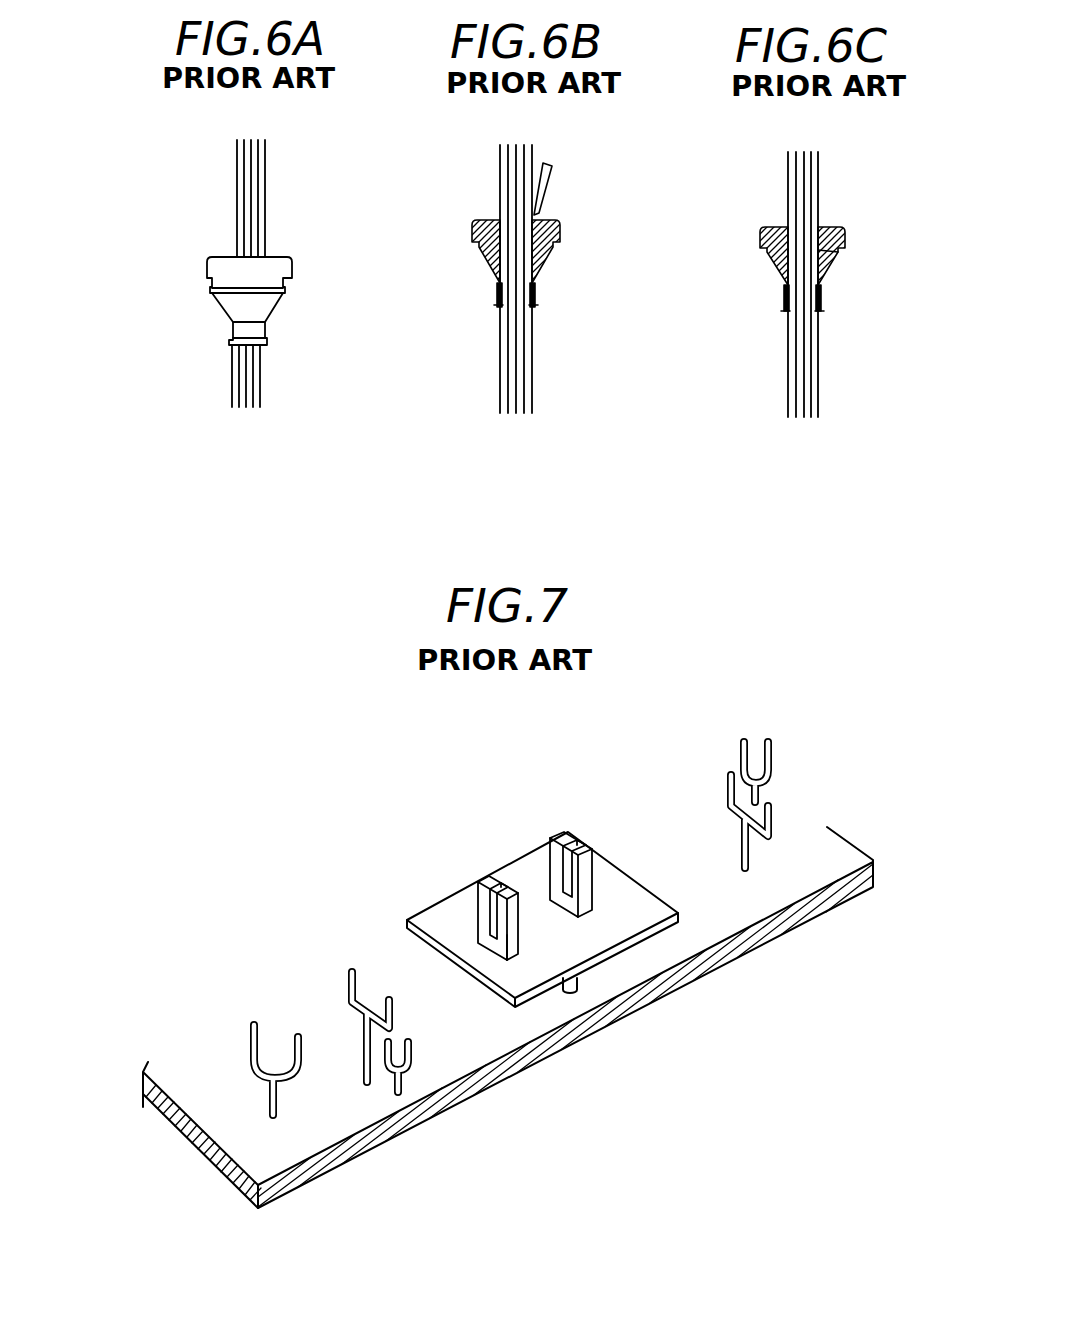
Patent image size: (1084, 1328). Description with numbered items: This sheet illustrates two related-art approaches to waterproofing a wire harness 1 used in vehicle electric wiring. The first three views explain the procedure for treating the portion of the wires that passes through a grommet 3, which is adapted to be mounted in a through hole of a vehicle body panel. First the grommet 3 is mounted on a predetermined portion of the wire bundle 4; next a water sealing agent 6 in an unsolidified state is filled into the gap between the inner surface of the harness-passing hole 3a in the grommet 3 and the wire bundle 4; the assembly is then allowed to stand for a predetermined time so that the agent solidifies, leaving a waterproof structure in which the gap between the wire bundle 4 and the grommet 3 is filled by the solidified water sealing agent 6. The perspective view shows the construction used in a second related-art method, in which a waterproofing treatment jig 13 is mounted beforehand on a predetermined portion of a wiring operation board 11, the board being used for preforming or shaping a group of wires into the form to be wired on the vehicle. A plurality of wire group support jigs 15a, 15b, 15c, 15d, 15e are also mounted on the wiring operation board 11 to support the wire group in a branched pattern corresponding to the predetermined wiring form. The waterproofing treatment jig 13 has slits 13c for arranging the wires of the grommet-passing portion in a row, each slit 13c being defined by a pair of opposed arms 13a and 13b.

In FIG. 6A, the wire harness 1 is at (223, 273).
In FIG. 6A, the grommet 3 is at (207, 278).
In FIG. 6B, the grommet 3 is at (480, 258).
In FIG. 6C, the grommet 3 is at (845, 237).
In FIG. 6B, the harness-passing hole 3a is at (498, 222).
In FIG. 6A, the wire bundle 4 is at (240, 208).
In FIG. 6B, the wire bundle 4 is at (500, 168).
In FIG. 6C, the wire bundle 4 is at (815, 335).
In FIG. 6B, the water sealing agent 6 is at (552, 170).
In FIG. 6C, the water sealing agent 6 is at (832, 270).
In FIG. 7, the wiring operation board 11 is at (528, 1068).
In FIG. 7, the waterproofing treatment jig 13 is at (535, 870).
In FIG. 7, the arm 13a is at (470, 897).
In FIG. 7, the arm 13b is at (518, 935).
In FIG. 7, the slit 13c is at (470, 898).
In FIG. 7, the wire group support jig 15a is at (250, 1036).
In FIG. 7, the wire group support jig 15b is at (348, 990).
In FIG. 7, the wire group support jig 15c is at (412, 1055).
In FIG. 7, the wire group support jig 15d is at (773, 808).
In FIG. 7, the wire group support jig 15e is at (773, 760).